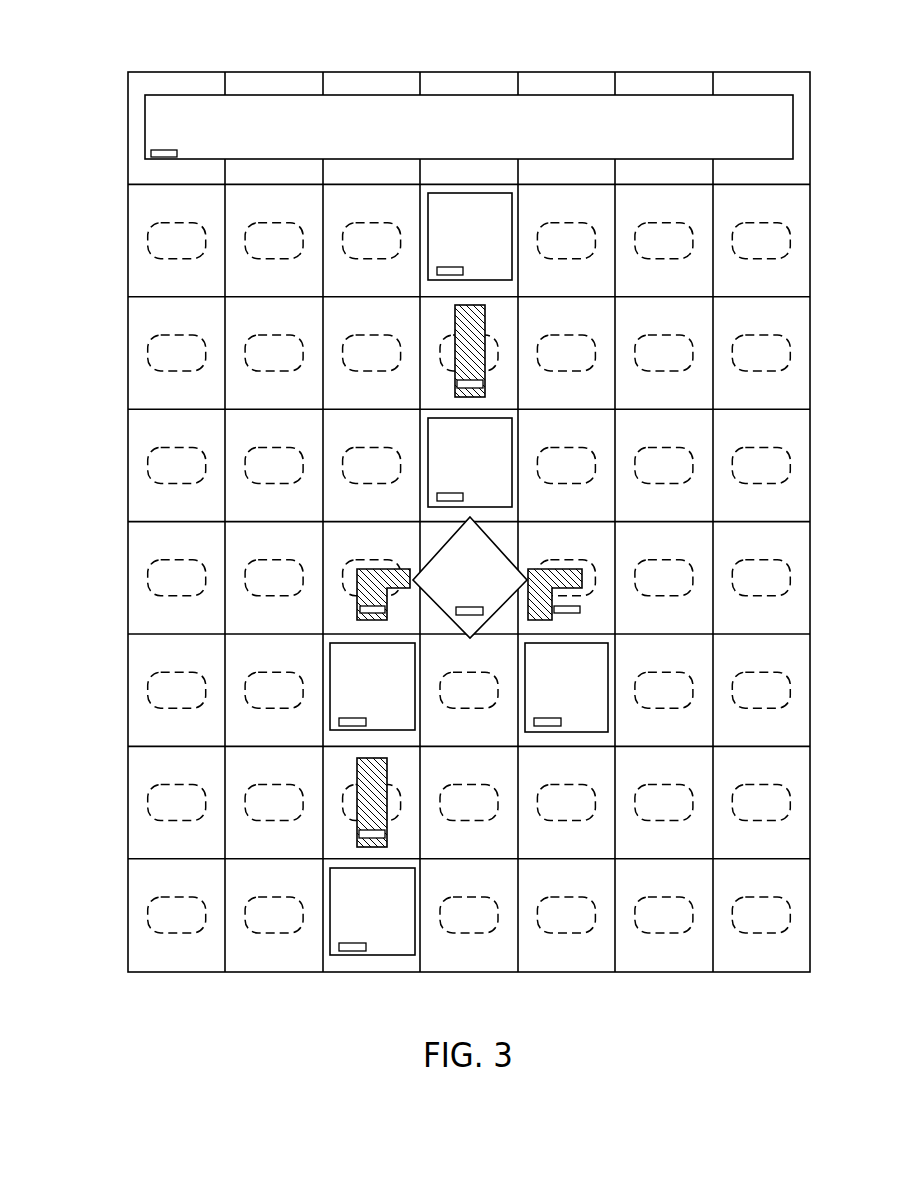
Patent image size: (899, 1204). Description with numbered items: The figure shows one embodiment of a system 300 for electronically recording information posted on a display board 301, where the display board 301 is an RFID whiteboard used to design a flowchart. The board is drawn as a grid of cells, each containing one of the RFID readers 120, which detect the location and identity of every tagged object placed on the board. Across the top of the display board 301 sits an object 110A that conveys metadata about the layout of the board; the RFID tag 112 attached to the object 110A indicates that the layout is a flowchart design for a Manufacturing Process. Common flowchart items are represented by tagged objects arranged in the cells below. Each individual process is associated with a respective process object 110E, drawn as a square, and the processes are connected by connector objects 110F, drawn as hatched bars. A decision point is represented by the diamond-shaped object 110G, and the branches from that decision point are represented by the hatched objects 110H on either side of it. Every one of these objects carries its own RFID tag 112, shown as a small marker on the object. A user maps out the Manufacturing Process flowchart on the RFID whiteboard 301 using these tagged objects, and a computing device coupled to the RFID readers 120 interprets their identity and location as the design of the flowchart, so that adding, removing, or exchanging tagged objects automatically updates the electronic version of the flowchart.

The system 300 is at (188, 33).
The display board 301 is at (128, 74).
The object 110A is at (145, 117).
The RFID tag 112 is at (151, 153).
The RFID readers 120 is at (147, 352).
The process object 110E is at (428, 205).
The connector object 110F is at (455, 313).
The decision point object 110G is at (446, 543).
The branch object 110H is at (372, 569).